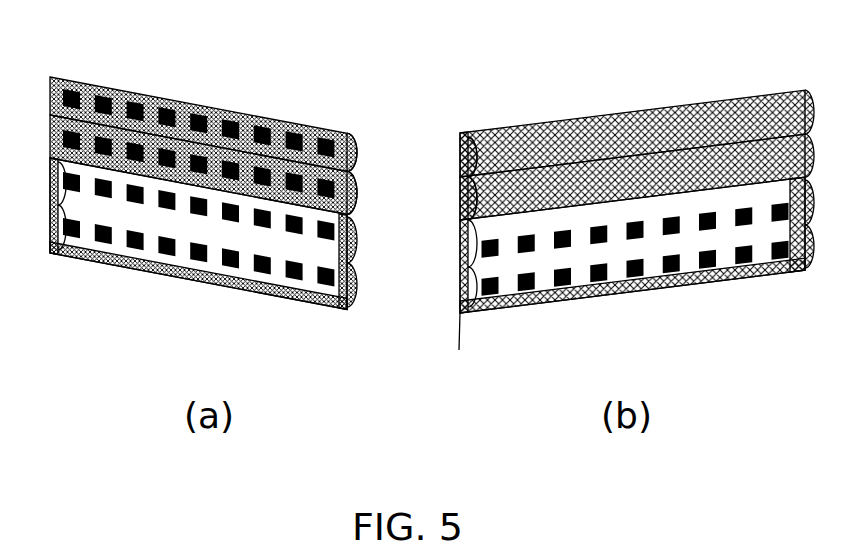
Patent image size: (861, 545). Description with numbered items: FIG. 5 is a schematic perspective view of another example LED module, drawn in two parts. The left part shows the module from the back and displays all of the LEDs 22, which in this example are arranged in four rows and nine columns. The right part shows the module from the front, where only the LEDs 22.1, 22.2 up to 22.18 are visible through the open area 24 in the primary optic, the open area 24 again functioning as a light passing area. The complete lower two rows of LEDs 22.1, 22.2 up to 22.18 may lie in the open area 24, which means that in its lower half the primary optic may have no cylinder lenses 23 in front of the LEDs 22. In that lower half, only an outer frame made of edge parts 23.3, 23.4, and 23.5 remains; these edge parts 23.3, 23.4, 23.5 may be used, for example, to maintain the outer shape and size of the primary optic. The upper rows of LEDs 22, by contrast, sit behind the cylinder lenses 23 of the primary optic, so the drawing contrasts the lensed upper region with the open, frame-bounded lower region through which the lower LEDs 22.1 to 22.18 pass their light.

The LEDs 22 is at (419, 118).
The LED 22.1 is at (83, 181).
The LED 22.2 is at (110, 190).
The LED 22.18 is at (325, 266).
The cylinder lenses 23 is at (357, 197).
The edge part 23.3 is at (52, 175).
The edge part 23.4 is at (257, 287).
The edge part 23.5 is at (356, 236).
The open area 24 is at (215, 230).